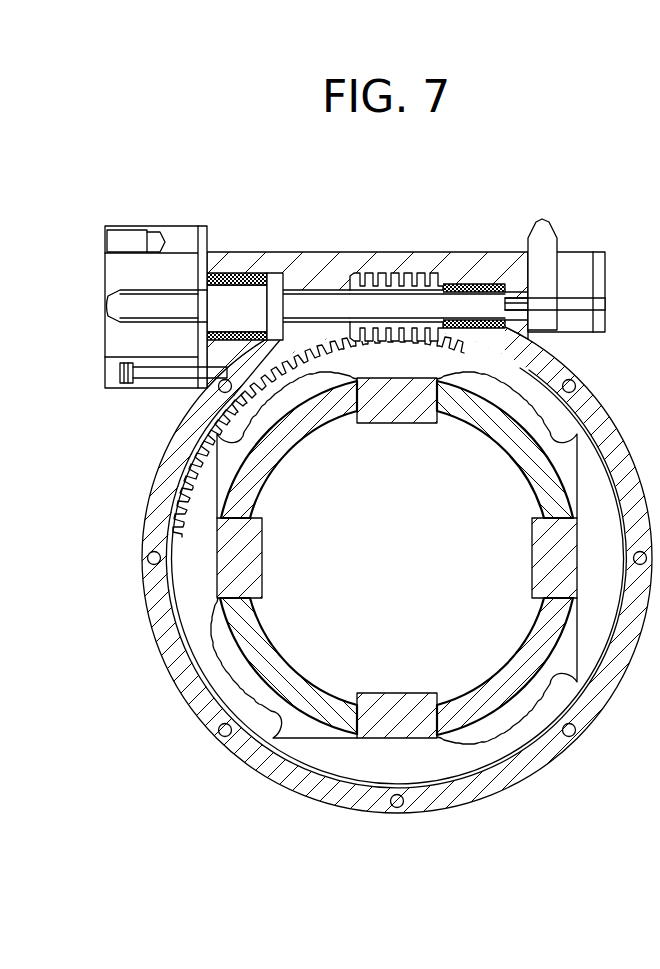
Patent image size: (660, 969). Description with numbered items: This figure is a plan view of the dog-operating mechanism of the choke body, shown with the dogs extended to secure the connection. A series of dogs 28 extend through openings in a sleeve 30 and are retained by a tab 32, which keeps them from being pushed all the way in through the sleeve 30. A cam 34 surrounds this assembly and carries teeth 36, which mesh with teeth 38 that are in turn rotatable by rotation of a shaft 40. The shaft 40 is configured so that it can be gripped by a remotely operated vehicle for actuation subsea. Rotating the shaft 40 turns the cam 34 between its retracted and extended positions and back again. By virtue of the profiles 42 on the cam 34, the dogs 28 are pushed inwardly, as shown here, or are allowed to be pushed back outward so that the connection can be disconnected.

The dogs 28 is at (412, 409).
The sleeve 30 is at (492, 442).
The tab 32 is at (330, 413).
The cam 34 is at (608, 504).
The teeth 36 is at (180, 437).
The teeth 38 is at (423, 273).
The shaft 40 is at (113, 292).
The profiles 42 is at (560, 440).